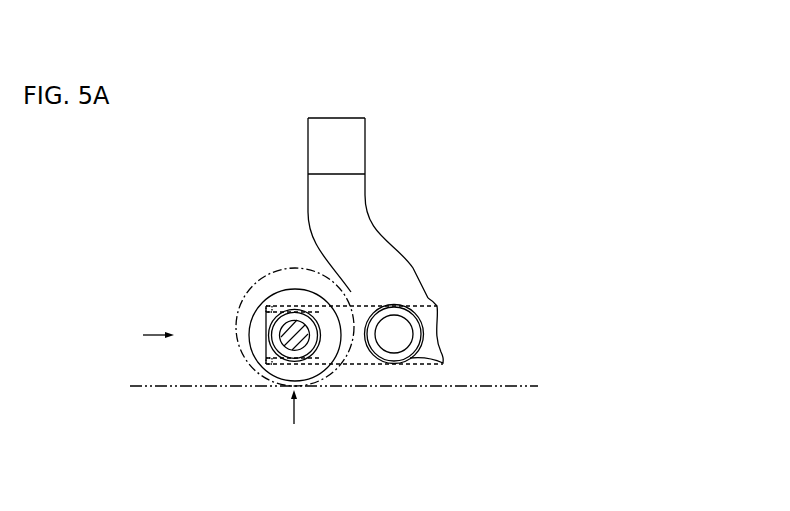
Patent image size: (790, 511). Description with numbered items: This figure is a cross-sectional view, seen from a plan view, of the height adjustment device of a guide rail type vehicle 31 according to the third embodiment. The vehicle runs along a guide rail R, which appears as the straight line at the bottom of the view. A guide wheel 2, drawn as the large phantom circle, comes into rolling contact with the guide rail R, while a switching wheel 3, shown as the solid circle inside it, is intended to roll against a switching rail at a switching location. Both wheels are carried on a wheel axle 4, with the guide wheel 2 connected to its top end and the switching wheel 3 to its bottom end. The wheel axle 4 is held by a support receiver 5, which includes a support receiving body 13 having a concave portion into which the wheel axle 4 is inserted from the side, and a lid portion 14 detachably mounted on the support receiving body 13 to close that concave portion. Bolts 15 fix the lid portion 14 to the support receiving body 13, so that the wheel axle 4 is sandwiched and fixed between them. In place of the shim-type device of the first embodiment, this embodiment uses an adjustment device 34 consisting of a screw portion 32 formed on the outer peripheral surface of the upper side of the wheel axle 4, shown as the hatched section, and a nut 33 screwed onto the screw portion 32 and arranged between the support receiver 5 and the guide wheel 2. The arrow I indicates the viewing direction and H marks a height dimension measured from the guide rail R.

The guide wheel 2 is at (284, 268).
The switching wheel 3 is at (265, 300).
The wheel axle 4 is at (320, 338).
The support receiver 5 is at (309, 379).
The support receiving body 13 is at (337, 365).
The lid portion 14 is at (266, 337).
The bolts 15 is at (266, 308).
The guide rail type vehicle 31 is at (420, 181).
The screw portion 32 is at (305, 325).
The nut 33 is at (321, 335).
The adjustment device 34 is at (378, 282).
The guide rail R is at (166, 388).
The height H is at (294, 419).
The viewing direction I is at (153, 335).